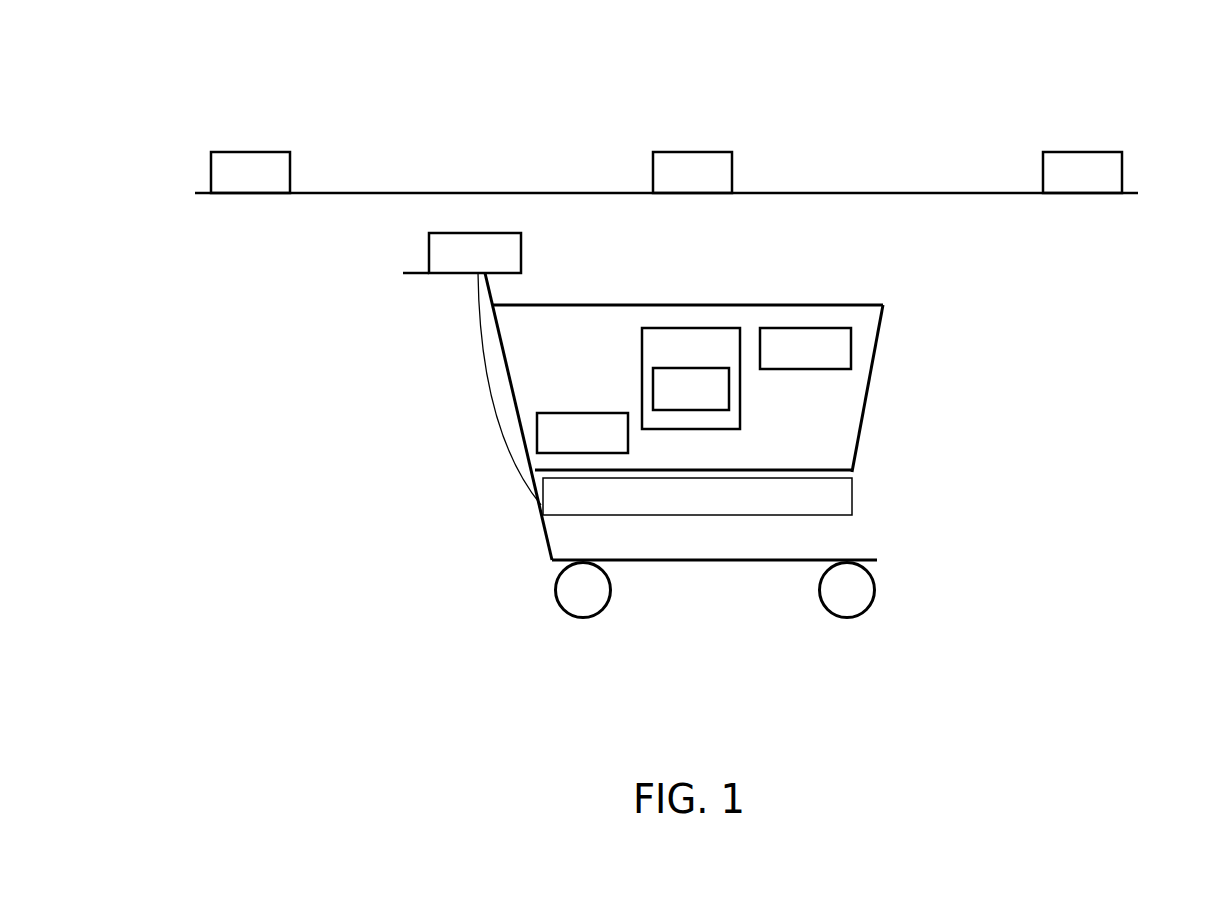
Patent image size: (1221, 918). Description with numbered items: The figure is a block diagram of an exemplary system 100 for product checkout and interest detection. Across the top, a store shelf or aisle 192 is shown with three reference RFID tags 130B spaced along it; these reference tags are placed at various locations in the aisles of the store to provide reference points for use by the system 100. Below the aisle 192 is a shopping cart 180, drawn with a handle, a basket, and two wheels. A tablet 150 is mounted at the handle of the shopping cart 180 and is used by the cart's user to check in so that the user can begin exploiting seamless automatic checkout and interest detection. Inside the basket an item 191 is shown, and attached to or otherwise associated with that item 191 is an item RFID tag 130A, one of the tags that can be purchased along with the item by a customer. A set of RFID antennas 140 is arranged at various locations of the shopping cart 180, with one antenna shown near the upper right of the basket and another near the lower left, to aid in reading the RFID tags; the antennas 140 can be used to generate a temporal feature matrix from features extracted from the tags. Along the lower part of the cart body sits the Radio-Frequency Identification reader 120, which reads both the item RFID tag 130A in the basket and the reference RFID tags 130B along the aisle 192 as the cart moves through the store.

The system 100 is at (243, 62).
The aisles 192 is at (1105, 80).
The reference RFID tags 130B is at (222, 185).
The shopping cart 180 is at (275, 257).
The tablet 150 is at (454, 266).
The items 191 is at (670, 360).
The item RFID tags 130A is at (662, 401).
The RFID antennas 140 is at (855, 470).
The RFID reader 120 is at (697, 496).